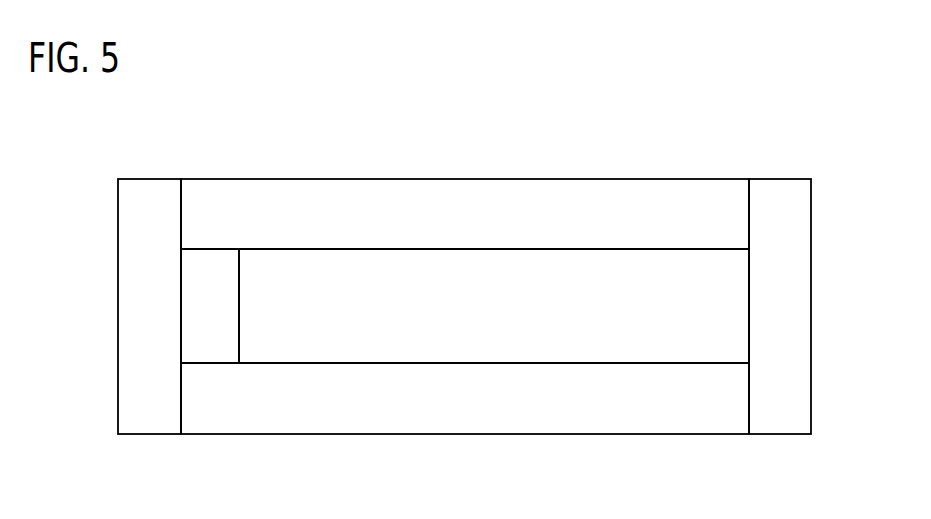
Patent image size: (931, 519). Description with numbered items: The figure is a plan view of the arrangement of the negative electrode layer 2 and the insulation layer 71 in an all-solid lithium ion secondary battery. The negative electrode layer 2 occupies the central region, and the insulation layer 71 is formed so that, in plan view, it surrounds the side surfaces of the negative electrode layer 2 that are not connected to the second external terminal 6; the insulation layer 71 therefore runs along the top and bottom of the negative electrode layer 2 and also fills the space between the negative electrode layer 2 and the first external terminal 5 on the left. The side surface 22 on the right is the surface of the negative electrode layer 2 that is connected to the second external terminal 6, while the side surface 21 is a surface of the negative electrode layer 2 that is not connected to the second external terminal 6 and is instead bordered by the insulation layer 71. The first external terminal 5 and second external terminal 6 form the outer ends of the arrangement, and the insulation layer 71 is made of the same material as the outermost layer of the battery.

The negative electrode layer 2 is at (628, 345).
The side surface not connected to the second external terminal 21 is at (605, 249).
The side surface connected to the second external terminal 22 is at (749, 289).
The first external terminal 5 is at (148, 410).
The second external terminal 6 is at (797, 388).
The insulation layer 71 is at (210, 270).